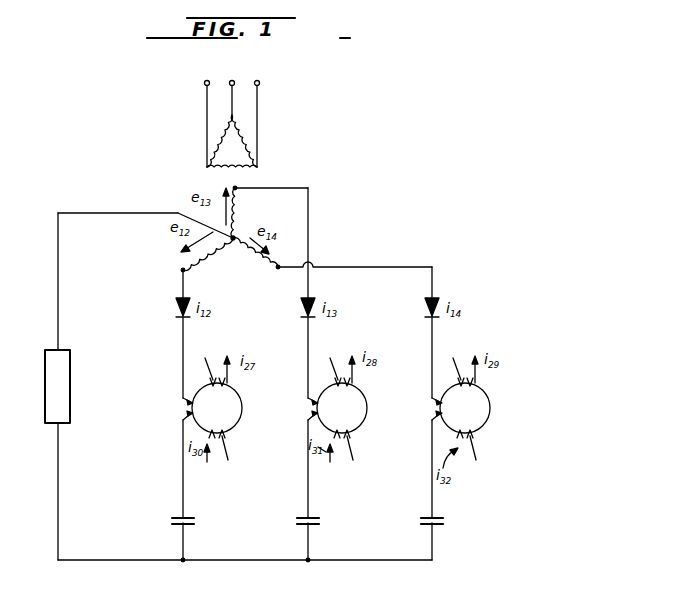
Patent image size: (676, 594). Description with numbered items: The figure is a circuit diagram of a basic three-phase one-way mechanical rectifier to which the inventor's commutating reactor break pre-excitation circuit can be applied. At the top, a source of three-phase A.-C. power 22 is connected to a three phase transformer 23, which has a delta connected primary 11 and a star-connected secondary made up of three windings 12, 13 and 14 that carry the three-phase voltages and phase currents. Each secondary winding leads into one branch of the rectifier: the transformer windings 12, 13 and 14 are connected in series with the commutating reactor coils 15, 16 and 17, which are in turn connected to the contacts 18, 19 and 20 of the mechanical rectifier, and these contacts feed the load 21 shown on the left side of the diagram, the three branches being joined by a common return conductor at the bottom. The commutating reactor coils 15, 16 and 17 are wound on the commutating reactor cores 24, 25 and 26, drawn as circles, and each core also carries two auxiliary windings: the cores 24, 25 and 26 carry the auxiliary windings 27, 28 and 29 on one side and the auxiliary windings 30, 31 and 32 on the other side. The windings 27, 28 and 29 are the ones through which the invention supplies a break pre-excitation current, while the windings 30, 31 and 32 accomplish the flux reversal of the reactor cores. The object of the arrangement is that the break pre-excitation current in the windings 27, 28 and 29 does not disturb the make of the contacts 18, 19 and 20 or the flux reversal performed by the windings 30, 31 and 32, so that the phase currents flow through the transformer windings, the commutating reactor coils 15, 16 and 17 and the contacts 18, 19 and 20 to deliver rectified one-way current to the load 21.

The delta connected primary 11 is at (230, 148).
The transformer winding 12 is at (203, 258).
The transformer winding 13 is at (242, 211).
The transformer winding 14 is at (253, 265).
The commutating reactor coil 15 is at (183, 408).
The commutating reactor coil 16 is at (308, 408).
The commutating reactor coil 17 is at (432, 406).
The contact 18 is at (196, 522).
The contact 19 is at (321, 522).
The contact 20 is at (445, 522).
The load 21 is at (72, 390).
The source of three-phase A.-C. power 22 is at (254, 78).
The three phase transformer 23 is at (264, 174).
The commutating reactor core 24 is at (243, 412).
The commutating reactor core 25 is at (368, 420).
The commutating reactor core 26 is at (493, 412).
The auxiliary winding 27 is at (230, 378).
The auxiliary winding 28 is at (355, 378).
The auxiliary winding 29 is at (478, 377).
The auxiliary winding 30 is at (230, 443).
The auxiliary winding 31 is at (357, 443).
The auxiliary winding 32 is at (480, 443).